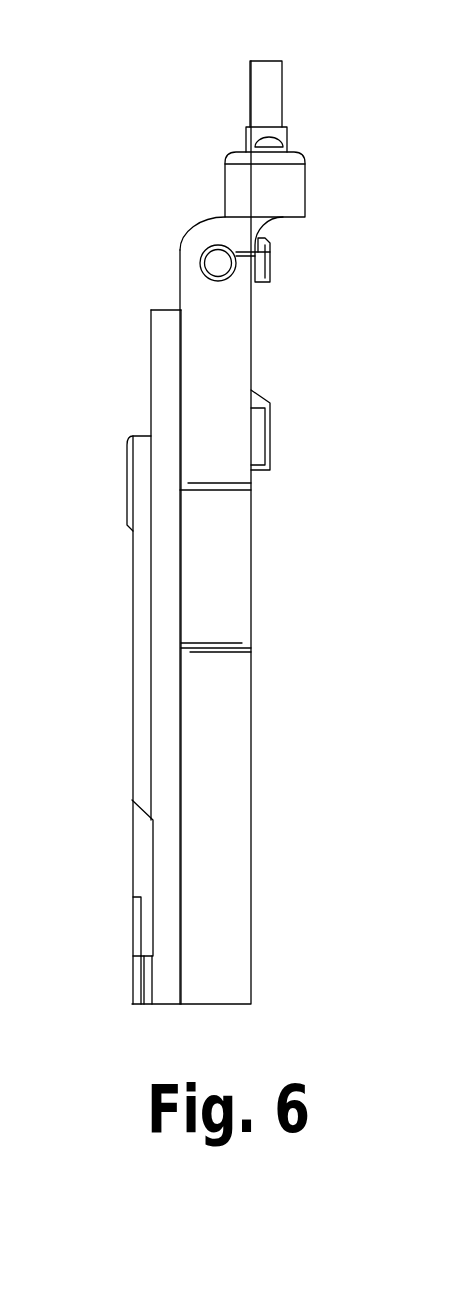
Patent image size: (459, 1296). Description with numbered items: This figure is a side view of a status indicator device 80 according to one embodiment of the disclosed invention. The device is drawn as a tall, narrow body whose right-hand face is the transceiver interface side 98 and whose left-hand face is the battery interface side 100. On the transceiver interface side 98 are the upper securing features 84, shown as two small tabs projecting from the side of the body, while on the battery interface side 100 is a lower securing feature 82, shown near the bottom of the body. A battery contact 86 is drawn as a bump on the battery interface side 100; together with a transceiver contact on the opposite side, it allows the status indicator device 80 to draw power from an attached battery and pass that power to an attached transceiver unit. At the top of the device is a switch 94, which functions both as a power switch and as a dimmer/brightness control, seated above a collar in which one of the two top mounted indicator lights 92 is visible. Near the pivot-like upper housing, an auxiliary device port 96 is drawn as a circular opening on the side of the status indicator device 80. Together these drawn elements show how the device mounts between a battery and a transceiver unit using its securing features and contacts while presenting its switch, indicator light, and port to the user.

The status indicator device 80 is at (251, 938).
The lower securing features 82 is at (147, 916).
The upper securing features 84 is at (268, 268).
The battery contact 86 is at (127, 477).
The indicator light 92 is at (278, 134).
The switch 94 is at (281, 72).
The auxiliary device port 96 is at (215, 262).
The transceiver interface side 98 is at (251, 732).
The battery interface side 100 is at (132, 712).